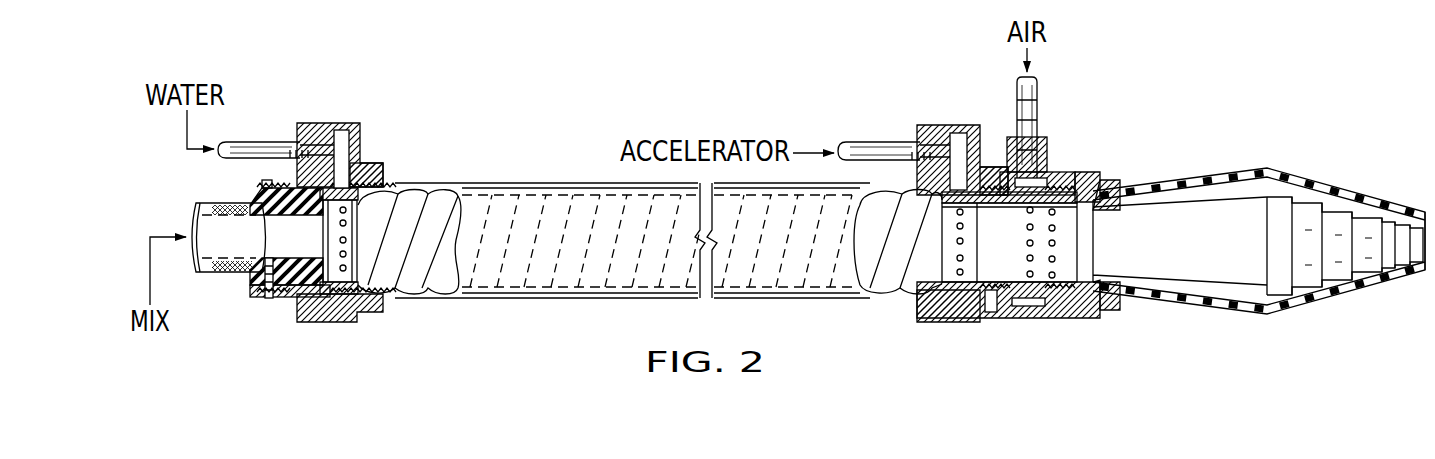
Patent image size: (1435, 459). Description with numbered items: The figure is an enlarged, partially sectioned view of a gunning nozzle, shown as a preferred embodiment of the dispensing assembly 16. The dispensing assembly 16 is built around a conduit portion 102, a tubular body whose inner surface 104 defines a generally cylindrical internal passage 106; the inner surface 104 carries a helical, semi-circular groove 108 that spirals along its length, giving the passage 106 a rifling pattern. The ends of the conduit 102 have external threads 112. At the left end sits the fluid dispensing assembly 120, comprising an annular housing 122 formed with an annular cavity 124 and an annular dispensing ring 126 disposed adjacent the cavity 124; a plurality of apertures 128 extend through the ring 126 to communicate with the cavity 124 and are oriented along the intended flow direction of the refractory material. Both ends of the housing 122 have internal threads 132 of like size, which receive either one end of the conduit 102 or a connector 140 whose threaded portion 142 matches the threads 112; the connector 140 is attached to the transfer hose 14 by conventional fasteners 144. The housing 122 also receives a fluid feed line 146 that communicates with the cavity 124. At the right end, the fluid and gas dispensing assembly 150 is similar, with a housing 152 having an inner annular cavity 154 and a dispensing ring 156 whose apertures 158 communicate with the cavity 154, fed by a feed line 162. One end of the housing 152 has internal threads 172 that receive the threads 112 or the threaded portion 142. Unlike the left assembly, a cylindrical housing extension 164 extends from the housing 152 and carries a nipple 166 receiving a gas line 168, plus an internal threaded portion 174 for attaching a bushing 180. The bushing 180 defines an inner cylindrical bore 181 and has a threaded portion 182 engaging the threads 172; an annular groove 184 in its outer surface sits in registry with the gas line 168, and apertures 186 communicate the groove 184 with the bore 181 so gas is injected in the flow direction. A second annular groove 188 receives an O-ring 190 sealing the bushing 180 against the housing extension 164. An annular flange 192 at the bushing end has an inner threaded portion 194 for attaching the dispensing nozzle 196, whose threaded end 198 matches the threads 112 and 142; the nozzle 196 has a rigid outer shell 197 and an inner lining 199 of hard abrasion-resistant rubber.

The transfer hose 14 is at (210, 275).
The dispensing assembly 16 is at (573, 125).
The conduit portion 102 is at (548, 180).
The inner surface 104 is at (455, 293).
The internal passage 106 is at (420, 200).
The helical semi-circular groove 108 is at (410, 282).
The external threads 112 is at (393, 296).
The fluid dispensing assembly 120 is at (340, 115).
The annular housing 122 is at (312, 125).
The annular cavity 124 is at (345, 137).
The annular dispensing ring 126 is at (358, 172).
The apertures 128 is at (339, 240).
The internal threads 132 is at (305, 324).
The connector 140 is at (260, 280).
The threaded portion 142 is at (295, 297).
The fasteners 144 is at (268, 300).
The fluid feed line 146 is at (275, 140).
The fluid and gas dispensing assembly 150 is at (935, 98).
The housing 152 is at (925, 125).
The inner annular cavity 154 is at (958, 135).
The dispensing ring 156 is at (962, 186).
The apertures 158 is at (957, 240).
The feed line 162 is at (870, 142).
The cylindrical housing extension 164 is at (1023, 320).
The nipple 166 is at (1047, 142).
The gas line 168 is at (1035, 95).
The internal threads 172 is at (935, 323).
The internal threaded portion 174 is at (1003, 300).
The bushing 180 is at (1037, 306).
The inner cylindrical bore 181 is at (988, 268).
The threaded portion 182 is at (991, 310).
The annular groove 184 is at (1047, 182).
The apertures 186 is at (1033, 241).
The second annular groove 188 is at (1095, 178).
The O-ring 190 is at (1063, 304).
The annular flange 192 is at (1102, 317).
The inner threaded portion 194 is at (1102, 305).
The dispensing nozzle 196 is at (1247, 170).
The rigid outer shell 197 is at (1350, 188).
The threaded end 198 is at (1108, 186).
The inner lining 199 is at (1252, 303).